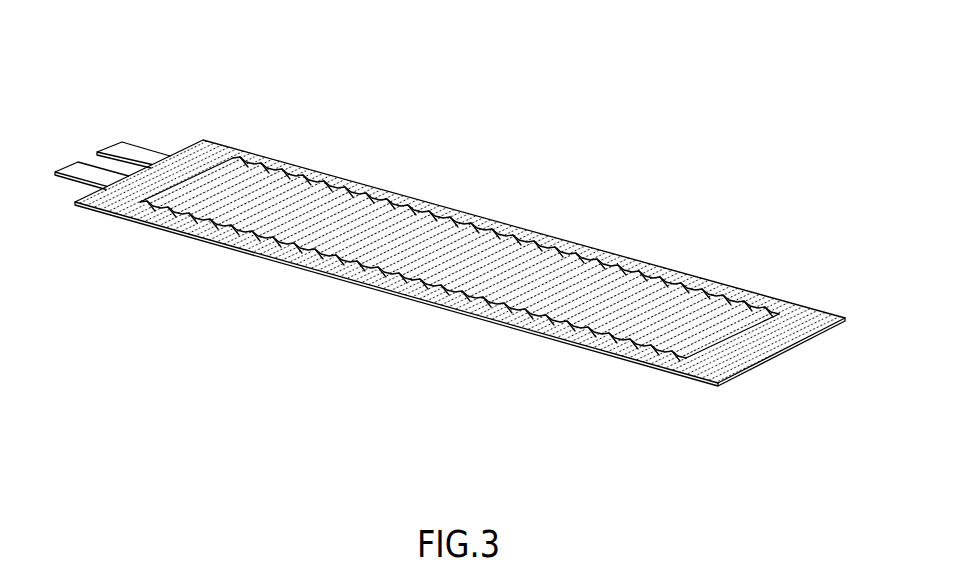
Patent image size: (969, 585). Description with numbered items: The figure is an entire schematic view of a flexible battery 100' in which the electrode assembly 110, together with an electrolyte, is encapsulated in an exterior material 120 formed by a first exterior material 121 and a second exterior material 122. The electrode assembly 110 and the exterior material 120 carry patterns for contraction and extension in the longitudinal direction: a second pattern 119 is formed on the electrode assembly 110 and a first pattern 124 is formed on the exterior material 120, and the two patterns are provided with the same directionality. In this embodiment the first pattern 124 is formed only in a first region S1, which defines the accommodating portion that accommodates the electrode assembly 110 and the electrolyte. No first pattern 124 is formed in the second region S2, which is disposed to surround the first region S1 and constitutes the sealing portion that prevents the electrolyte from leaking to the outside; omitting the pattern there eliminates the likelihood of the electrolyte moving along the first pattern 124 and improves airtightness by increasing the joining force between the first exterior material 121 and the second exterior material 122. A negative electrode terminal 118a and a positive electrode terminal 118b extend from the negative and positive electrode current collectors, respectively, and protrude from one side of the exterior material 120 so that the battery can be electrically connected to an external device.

The flexible battery 100' is at (450, 274).
The electrode assembly 110 is at (459, 245).
The negative electrode terminal 118a is at (135, 140).
The positive electrode terminal 118b is at (80, 162).
The second pattern 119 is at (594, 254).
The first pattern 124 is at (417, 242).
The exterior material 120 is at (460, 314).
The first exterior material 121 is at (738, 374).
The second exterior material 122 is at (460, 289).
The first region S1 is at (630, 293).
The second region S2 is at (799, 316).